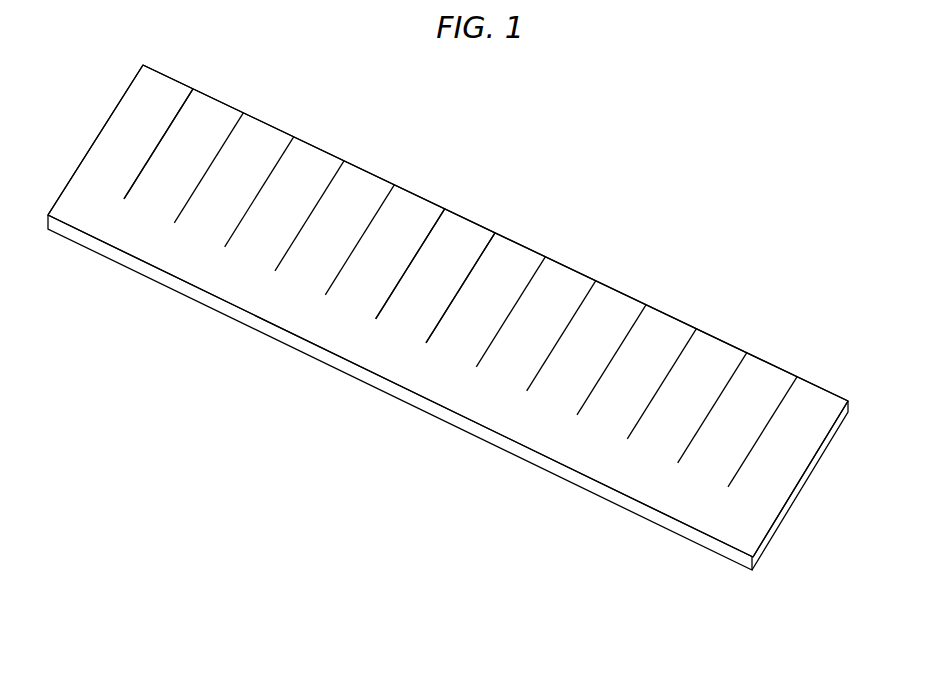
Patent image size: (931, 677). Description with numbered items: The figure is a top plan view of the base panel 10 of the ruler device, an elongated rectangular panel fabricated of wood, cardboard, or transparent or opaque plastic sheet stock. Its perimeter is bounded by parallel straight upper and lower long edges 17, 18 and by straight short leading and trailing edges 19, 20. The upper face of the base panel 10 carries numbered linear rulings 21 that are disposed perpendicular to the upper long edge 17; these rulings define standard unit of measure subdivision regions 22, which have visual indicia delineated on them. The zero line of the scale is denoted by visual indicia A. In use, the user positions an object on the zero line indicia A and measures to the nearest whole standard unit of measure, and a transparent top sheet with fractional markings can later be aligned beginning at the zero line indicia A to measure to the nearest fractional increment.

The base panel 10 is at (448, 311).
The upper long edge 17 is at (268, 122).
The lower long edge 18 is at (85, 240).
The leading edge 19 is at (108, 122).
The trailing edge 20 is at (782, 527).
The numbered linear rulings 21 is at (477, 260).
The standard unit of measure subdivision regions 22 is at (451, 302).
The zero line indicia A is at (166, 132).